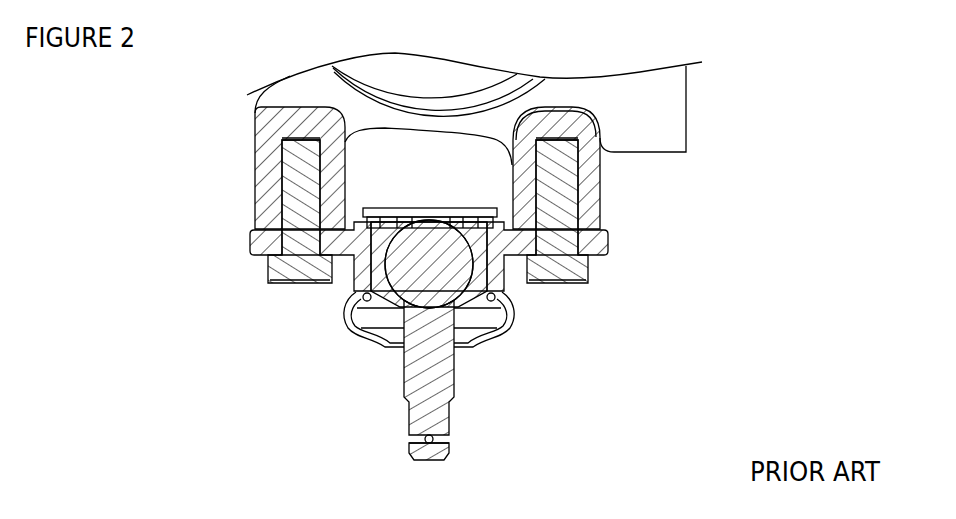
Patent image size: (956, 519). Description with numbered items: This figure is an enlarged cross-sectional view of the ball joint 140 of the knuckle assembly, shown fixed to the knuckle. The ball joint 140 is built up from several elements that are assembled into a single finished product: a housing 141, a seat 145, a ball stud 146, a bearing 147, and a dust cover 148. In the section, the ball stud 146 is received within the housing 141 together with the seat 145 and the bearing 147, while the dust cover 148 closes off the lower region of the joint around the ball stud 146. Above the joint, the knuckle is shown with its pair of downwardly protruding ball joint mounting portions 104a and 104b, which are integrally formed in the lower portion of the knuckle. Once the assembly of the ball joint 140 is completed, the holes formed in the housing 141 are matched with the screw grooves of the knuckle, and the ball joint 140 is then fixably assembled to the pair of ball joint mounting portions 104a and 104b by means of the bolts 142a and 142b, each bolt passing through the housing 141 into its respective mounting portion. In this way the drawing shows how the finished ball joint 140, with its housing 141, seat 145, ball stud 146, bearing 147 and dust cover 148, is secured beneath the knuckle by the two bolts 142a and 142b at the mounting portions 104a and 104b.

The ball joint mounting portion 104a is at (600, 178).
The ball joint mounting portion 104b is at (255, 168).
The ball joint 140 is at (519, 321).
The housing 141 is at (354, 289).
The bolt 142a is at (588, 277).
The bolt 142b is at (268, 268).
The seat 145 is at (418, 207).
The ball stud 146 is at (450, 366).
The bearing 147 is at (604, 238).
The dust cover 148 is at (352, 338).